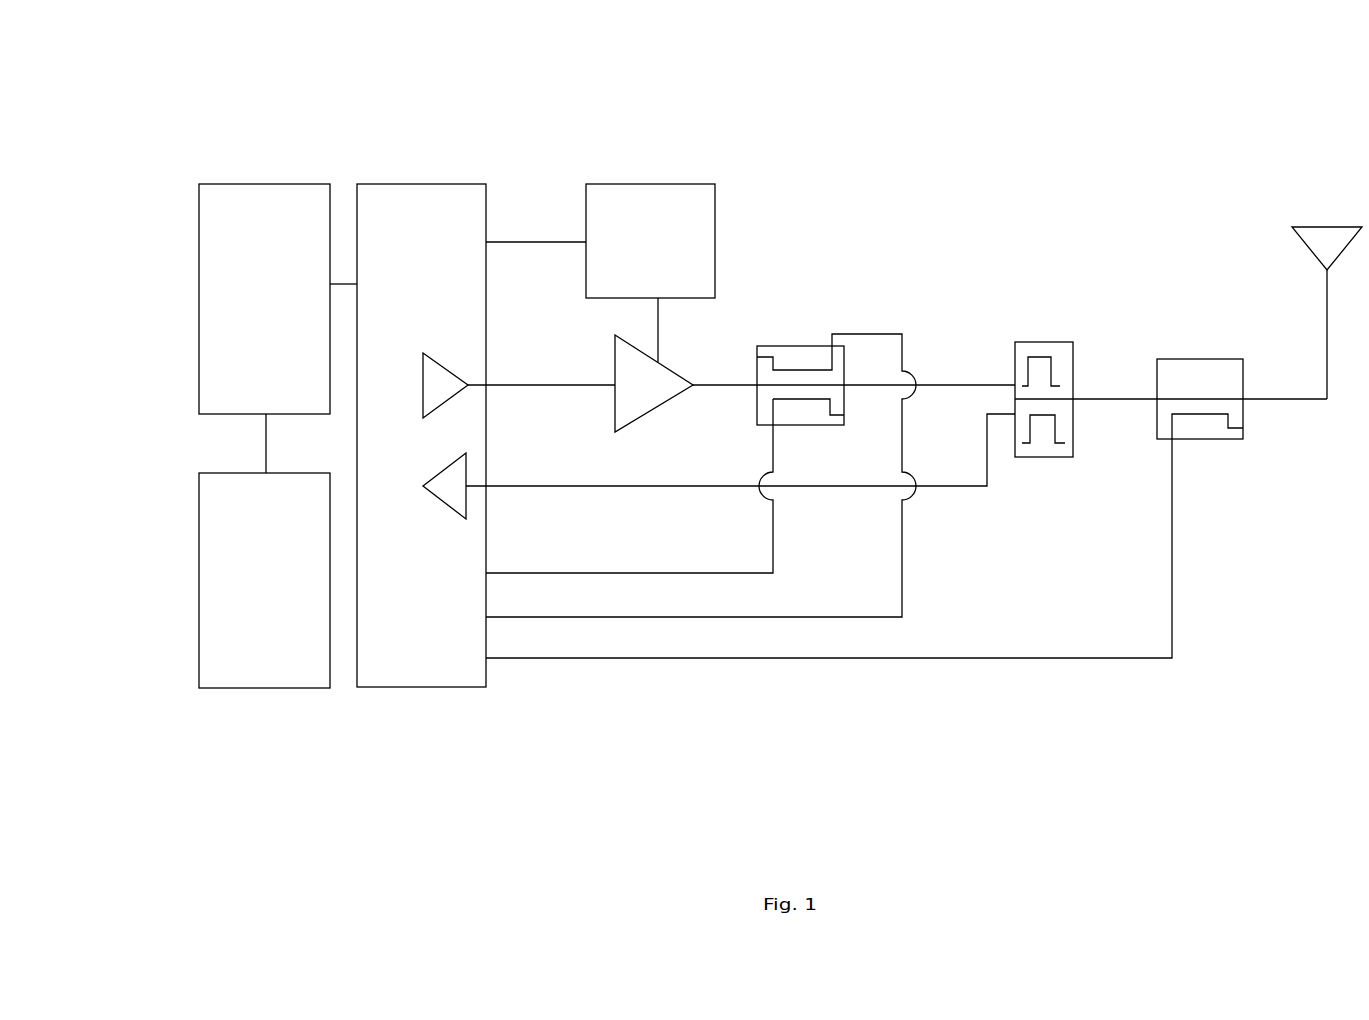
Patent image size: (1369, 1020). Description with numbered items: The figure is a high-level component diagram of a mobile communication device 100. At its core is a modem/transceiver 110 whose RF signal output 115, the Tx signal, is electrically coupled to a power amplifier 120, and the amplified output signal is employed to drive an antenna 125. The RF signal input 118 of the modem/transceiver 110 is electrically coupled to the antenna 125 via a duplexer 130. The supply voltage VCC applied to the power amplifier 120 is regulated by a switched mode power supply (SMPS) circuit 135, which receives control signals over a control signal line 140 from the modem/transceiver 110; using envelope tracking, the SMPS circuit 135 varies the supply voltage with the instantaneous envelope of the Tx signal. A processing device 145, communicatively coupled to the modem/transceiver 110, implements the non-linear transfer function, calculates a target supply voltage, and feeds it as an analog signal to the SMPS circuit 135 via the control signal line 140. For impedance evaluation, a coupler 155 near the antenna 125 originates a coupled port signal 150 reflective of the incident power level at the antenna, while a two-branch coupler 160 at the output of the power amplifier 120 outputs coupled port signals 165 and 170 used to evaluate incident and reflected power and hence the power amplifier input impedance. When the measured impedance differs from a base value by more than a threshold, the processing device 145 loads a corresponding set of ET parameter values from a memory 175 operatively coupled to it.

The mobile communication device 100 is at (400, 127).
The modem/transceiver 110 is at (447, 736).
The RF signal output 115 is at (410, 406).
The RF signal input 118 is at (410, 506).
The power amplifier 120 is at (715, 460).
The antenna 125 is at (1335, 146).
The duplexer 130 is at (1051, 326).
The switched mode power supply (SMPS) circuit 135 is at (665, 263).
The control signal line 140 is at (536, 229).
The processing device 145 is at (281, 331).
The coupled port signal 150 is at (525, 655).
The coupler 155 is at (1208, 348).
The two-branch coupler 160 is at (851, 320).
The coupled port signal 165 is at (525, 606).
The coupled port signal 170 is at (525, 560).
The memory 175 is at (281, 601).